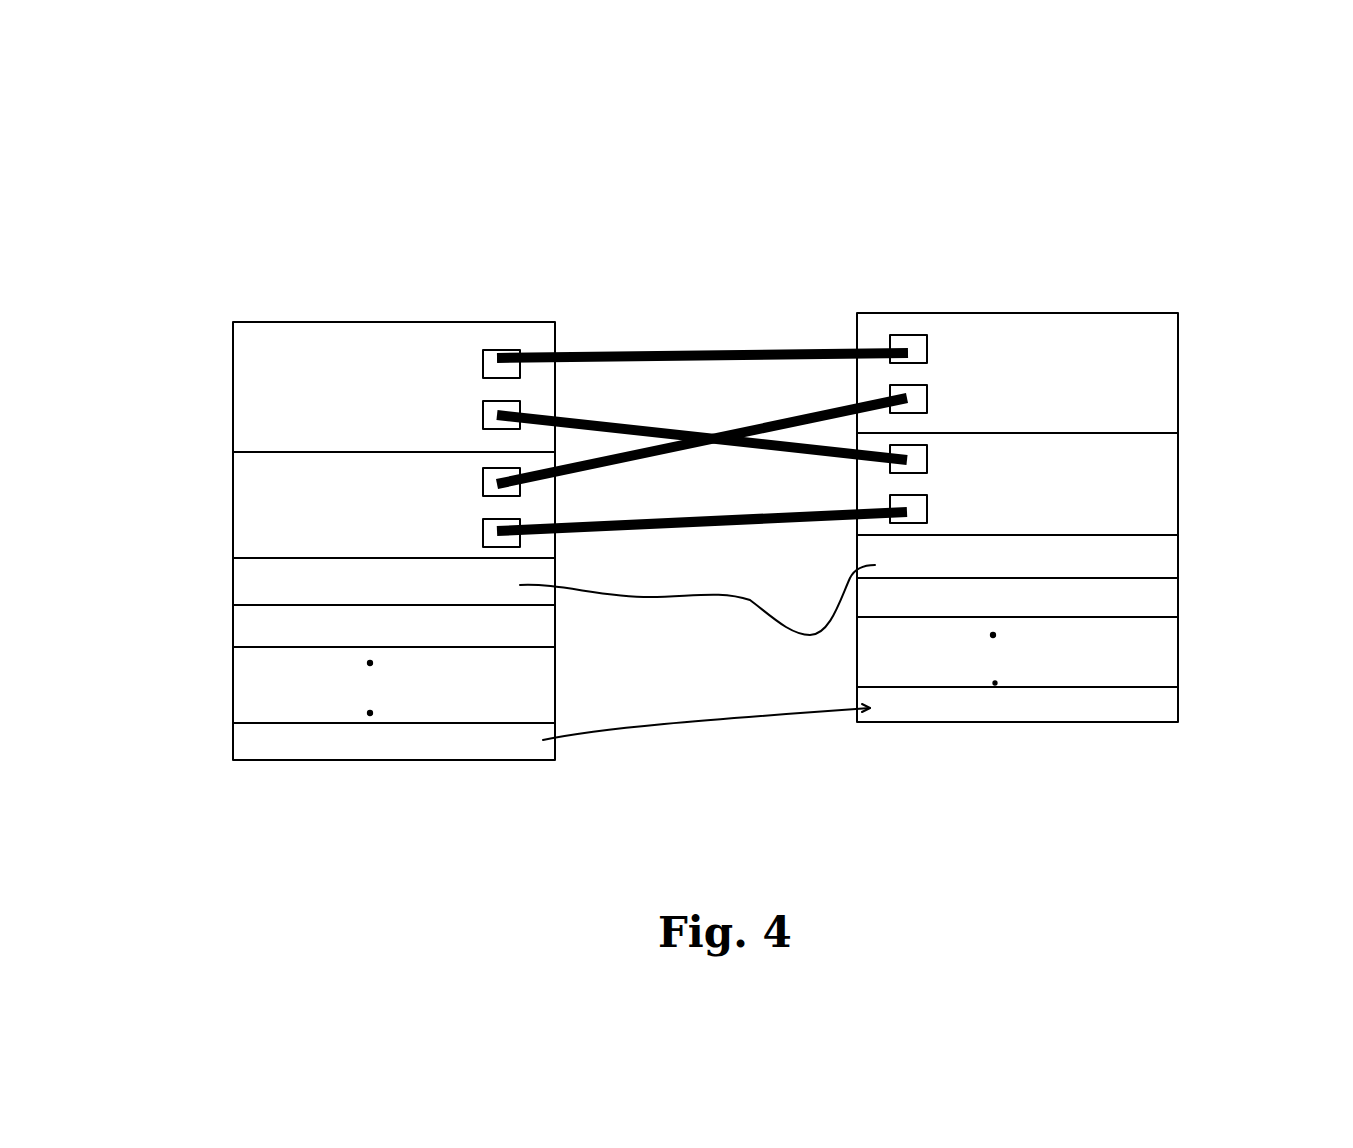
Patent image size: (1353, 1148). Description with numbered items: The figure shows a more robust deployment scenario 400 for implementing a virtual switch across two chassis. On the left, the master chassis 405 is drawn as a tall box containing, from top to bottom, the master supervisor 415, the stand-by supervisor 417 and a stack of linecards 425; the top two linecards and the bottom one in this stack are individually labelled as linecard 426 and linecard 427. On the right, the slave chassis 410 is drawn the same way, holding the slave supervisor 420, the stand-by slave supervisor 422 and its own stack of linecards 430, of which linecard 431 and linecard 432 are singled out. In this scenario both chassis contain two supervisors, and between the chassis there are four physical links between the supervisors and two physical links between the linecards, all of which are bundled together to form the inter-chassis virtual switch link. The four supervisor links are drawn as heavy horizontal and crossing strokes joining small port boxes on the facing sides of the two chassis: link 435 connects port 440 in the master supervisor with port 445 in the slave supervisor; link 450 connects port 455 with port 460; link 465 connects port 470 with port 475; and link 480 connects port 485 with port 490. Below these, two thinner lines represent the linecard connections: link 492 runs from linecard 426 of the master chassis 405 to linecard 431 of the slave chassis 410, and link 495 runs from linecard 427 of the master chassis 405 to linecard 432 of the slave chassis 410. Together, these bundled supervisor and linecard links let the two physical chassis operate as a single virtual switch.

The deployment scenario 400 is at (932, 113).
The master chassis 405 is at (323, 310).
The slave chassis 410 is at (1083, 295).
The master supervisor 415 is at (248, 355).
The stand-by supervisor 417 is at (245, 468).
The slave supervisor 420 is at (1150, 333).
The stand-by slave supervisor 422 is at (1155, 451).
The linecards 425 is at (233, 562).
The linecard 426 is at (242, 583).
The linecard 427 is at (243, 748).
The linecards 430 is at (1197, 718).
The linecard 431 is at (1148, 558).
The linecard 432 is at (1160, 708).
The link 435 is at (660, 350).
The port 440 is at (490, 355).
The port 445 is at (910, 337).
The link 450 is at (615, 425).
The port 455 is at (505, 413).
The port 460 is at (895, 468).
The link 465 is at (640, 457).
The port 470 is at (510, 490).
The port 475 is at (895, 387).
The link 480 is at (708, 522).
The port 485 is at (510, 542).
The port 490 is at (880, 525).
The link 492 is at (665, 600).
The link 495 is at (710, 722).